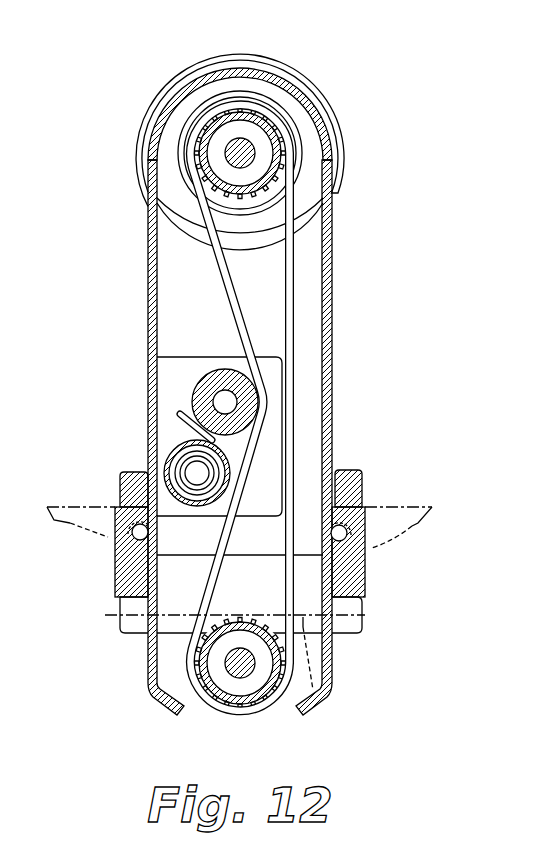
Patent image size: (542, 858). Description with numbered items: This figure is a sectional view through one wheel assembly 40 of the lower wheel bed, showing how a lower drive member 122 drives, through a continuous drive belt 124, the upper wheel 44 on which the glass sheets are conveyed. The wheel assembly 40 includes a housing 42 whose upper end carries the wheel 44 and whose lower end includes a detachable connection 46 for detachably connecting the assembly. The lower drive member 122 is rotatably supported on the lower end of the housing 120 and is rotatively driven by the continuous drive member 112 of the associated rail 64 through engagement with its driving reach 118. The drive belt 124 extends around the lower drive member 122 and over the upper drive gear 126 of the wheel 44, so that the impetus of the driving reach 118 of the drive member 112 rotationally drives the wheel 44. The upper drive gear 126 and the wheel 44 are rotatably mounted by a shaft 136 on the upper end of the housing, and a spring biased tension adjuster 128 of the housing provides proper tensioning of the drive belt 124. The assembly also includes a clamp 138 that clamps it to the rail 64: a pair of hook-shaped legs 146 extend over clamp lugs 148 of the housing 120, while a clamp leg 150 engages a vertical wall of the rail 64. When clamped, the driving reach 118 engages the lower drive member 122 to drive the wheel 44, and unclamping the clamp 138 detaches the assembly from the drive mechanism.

The wheel assembly 40 is at (343, 247).
The housing 42 is at (147, 279).
The wheel 44 is at (305, 76).
The detachable connection 46 is at (424, 530).
The rail 64 is at (100, 503).
The continuous drive member 112 is at (357, 612).
The driving reach 118 is at (335, 715).
The housing 120 is at (336, 362).
The lower drive member 122 is at (223, 712).
The drive belt 124 is at (290, 325).
The upper drive gear 126 is at (224, 149).
The spring biased tension adjuster 128 is at (170, 425).
The shaft 136 is at (235, 150).
The clamp 138 is at (349, 455).
The legs 146 is at (117, 472).
The clamp lugs 148 is at (117, 515).
The clamp leg 150 is at (132, 626).